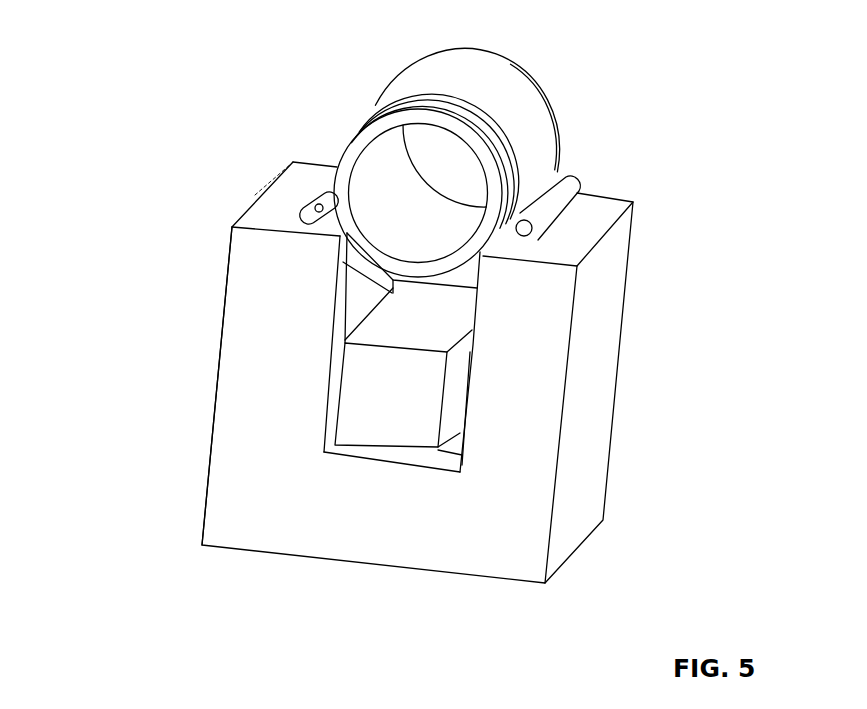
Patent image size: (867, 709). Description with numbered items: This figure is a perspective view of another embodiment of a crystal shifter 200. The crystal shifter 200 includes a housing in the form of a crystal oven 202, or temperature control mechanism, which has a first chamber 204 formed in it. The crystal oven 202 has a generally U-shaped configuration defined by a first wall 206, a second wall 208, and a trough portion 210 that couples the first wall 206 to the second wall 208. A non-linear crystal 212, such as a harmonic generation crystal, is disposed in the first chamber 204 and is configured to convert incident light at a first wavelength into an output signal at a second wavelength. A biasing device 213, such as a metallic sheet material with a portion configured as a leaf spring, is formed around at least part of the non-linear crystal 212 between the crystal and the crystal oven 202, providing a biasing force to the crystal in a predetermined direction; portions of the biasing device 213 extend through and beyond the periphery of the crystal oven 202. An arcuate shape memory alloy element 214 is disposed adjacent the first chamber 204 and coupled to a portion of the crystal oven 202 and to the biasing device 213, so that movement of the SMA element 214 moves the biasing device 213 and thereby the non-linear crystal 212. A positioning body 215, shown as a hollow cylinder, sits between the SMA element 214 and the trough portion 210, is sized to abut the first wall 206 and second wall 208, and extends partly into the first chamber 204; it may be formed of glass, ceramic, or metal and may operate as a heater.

The crystal shifter 200 is at (155, 92).
The crystal oven 202 is at (590, 392).
The first chamber 204 is at (472, 346).
The first wall 206 is at (242, 247).
The second wall 208 is at (595, 268).
The trough portion 210 is at (380, 487).
The non-linear crystal 212 is at (393, 427).
The biasing device 213 is at (460, 420).
The shape memory alloy (SMA) element 214 is at (517, 103).
The positioning body 215 is at (338, 172).